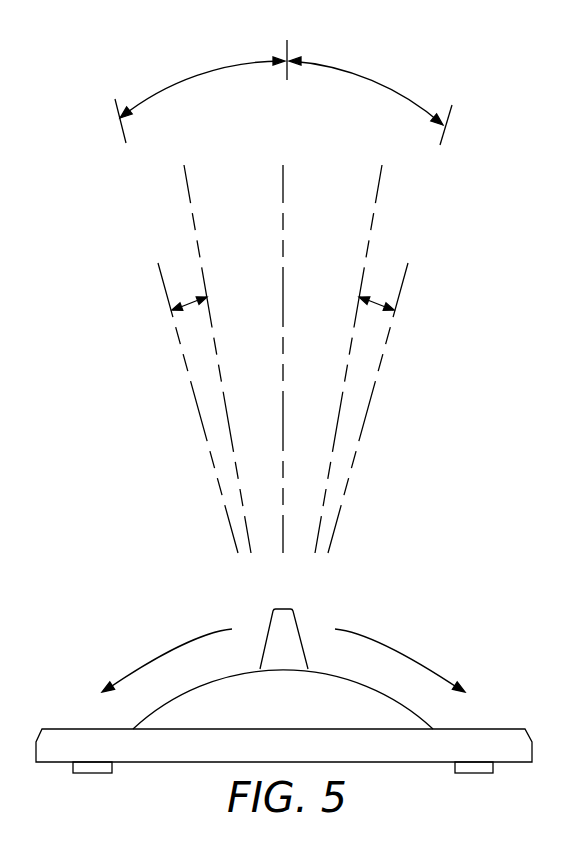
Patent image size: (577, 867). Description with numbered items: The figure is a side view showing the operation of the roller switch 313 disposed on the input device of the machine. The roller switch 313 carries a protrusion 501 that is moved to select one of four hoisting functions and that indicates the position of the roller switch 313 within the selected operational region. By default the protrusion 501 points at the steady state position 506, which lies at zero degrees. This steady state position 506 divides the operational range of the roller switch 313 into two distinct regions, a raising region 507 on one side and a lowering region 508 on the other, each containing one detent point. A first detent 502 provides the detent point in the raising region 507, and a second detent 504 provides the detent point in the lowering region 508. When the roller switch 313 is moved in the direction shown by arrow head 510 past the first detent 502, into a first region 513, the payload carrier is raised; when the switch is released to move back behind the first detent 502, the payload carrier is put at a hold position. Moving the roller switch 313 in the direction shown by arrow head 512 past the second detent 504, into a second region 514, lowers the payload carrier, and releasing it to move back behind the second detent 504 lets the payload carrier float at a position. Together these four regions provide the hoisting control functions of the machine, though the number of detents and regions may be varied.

The protrusion 501 is at (292, 623).
The first detent 502 is at (189, 186).
The second detent 504 is at (384, 177).
The steady state position 506 is at (285, 186).
The raising region 507 is at (201, 91).
The lowering region 508 is at (370, 91).
The arrow head 510 is at (167, 656).
The arrow head 512 is at (400, 656).
The first region 513 is at (198, 408).
The second region 514 is at (368, 408).
The roller switch 313 is at (407, 723).